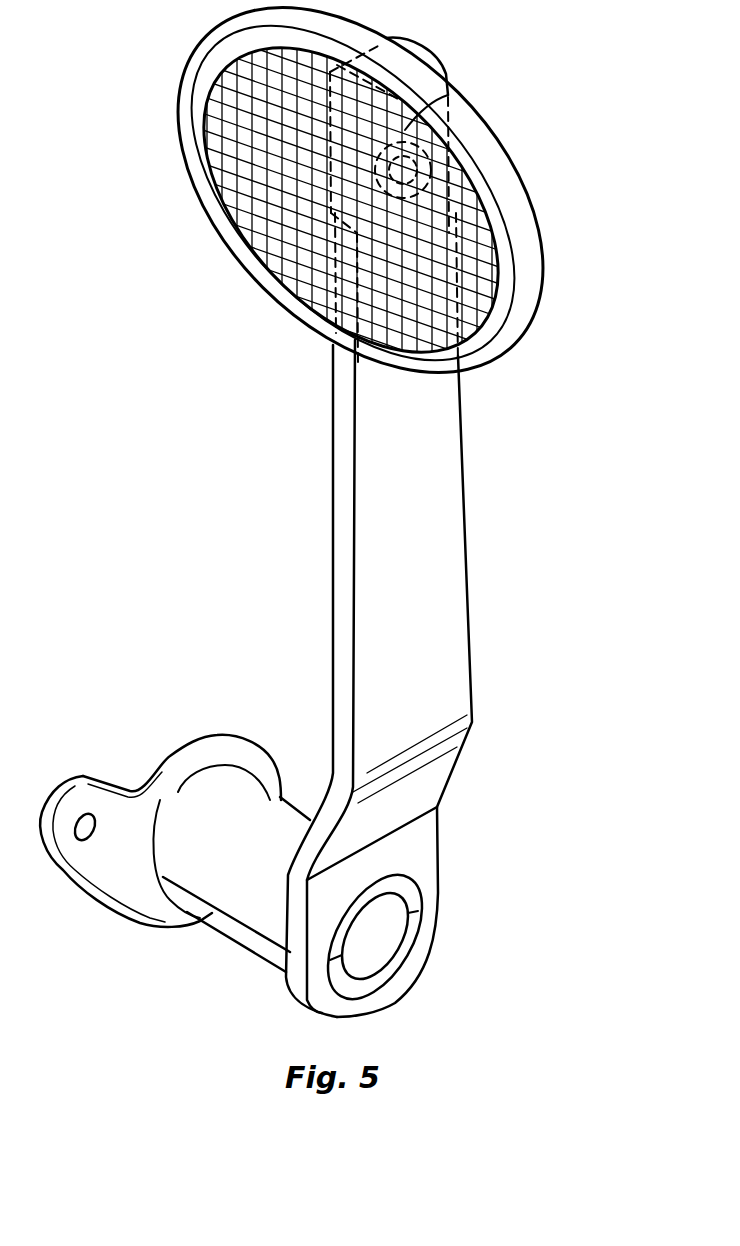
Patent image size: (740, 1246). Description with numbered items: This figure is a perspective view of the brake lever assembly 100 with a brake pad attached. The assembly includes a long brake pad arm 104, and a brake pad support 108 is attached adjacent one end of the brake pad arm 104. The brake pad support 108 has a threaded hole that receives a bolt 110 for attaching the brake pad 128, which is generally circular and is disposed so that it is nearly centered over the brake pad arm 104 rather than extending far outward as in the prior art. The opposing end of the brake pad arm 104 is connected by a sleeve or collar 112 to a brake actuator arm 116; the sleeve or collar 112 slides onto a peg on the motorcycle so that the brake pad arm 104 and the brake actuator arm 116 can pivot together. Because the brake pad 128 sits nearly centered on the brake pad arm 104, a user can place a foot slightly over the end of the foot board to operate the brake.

The brake lever assembly 100 is at (248, 481).
The brake pad arm 104 is at (443, 585).
The brake pad support 108 is at (448, 95).
The bolt 110 is at (447, 165).
The sleeve or collar 112 is at (229, 920).
The brake actuator arm 116 is at (122, 810).
The brake pad 128 is at (528, 267).